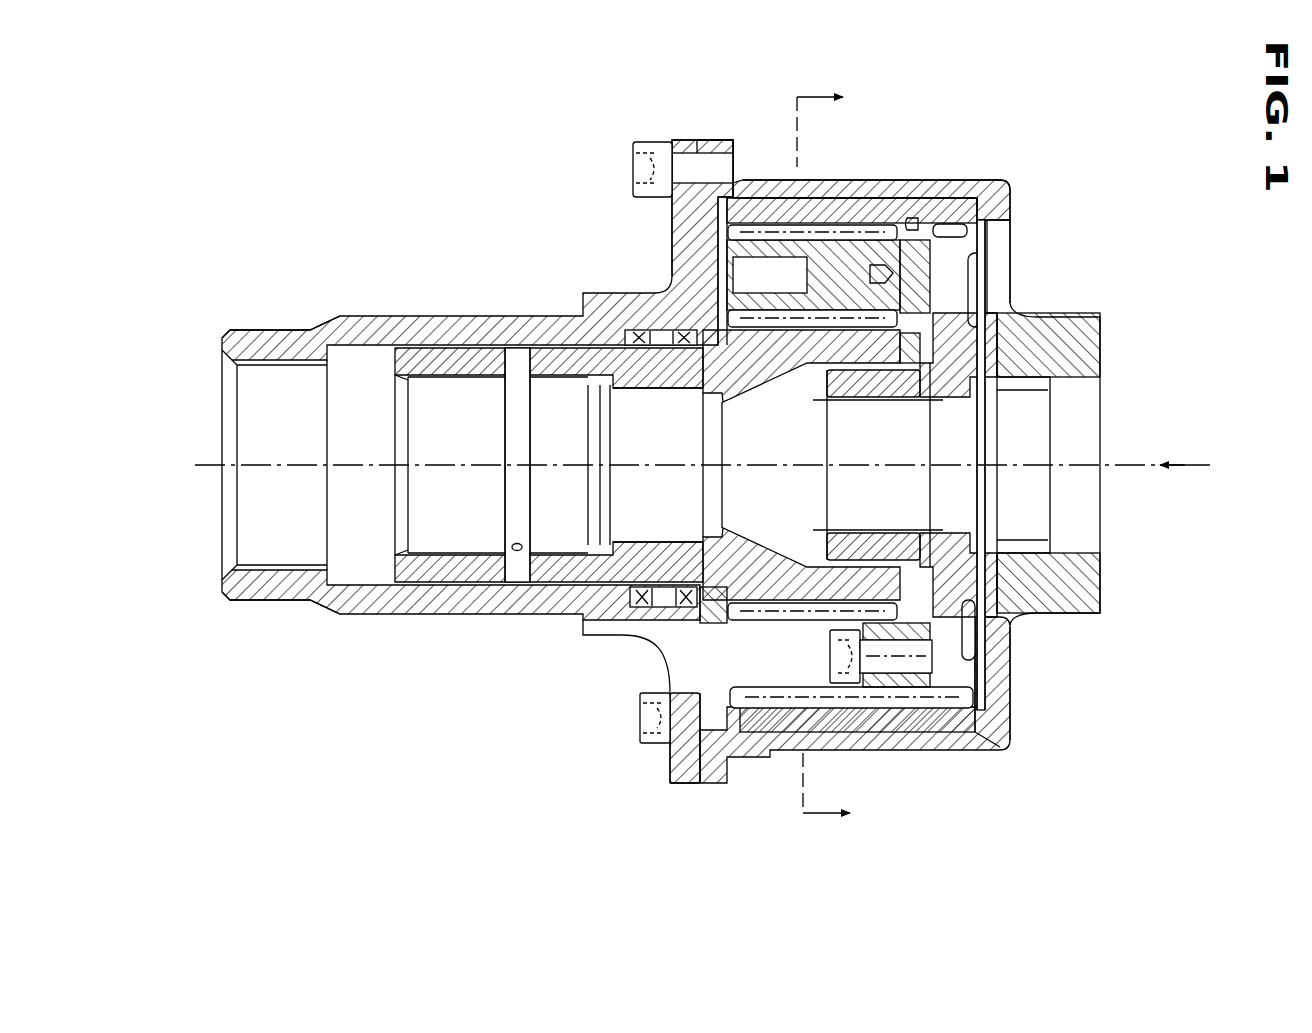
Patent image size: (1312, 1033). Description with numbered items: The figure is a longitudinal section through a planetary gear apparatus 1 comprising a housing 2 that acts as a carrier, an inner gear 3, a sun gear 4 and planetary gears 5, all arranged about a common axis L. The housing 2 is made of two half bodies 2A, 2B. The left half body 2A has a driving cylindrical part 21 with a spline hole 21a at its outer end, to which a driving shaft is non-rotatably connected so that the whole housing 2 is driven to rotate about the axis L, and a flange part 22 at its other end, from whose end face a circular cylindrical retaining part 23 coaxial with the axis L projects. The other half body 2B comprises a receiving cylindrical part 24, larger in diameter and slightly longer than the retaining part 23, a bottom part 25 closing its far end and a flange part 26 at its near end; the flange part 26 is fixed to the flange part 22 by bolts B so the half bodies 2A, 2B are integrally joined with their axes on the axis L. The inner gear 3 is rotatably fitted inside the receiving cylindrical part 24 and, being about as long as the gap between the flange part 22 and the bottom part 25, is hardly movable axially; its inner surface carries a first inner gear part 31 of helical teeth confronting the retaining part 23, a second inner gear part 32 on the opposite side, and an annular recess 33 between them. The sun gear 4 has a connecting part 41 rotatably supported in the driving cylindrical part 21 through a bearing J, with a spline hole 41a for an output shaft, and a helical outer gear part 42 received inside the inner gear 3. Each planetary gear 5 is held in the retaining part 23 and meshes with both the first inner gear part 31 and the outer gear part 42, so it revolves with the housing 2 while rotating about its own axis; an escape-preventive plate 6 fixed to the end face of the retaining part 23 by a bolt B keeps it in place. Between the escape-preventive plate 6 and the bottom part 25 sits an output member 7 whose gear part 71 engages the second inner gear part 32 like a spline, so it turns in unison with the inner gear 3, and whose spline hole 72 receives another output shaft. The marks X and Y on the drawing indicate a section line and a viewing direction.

The planetary gear apparatus 1 is at (972, 142).
The housing 2 is at (523, 314).
The half body 2A is at (408, 314).
The half body 2B is at (985, 176).
The inner gear 3 is at (833, 720).
The sun gear 4 is at (760, 633).
The planetary gear 5 is at (863, 217).
The escape-preventive plate 6 is at (913, 680).
The output member 7 is at (1020, 707).
The driving cylindrical part 21 is at (452, 314).
The spline hole 21a is at (275, 365).
The flange part 22 is at (682, 139).
The retaining part 23 is at (887, 660).
The receiving cylindrical part 24 is at (836, 178).
The bottom part 25 is at (1020, 670).
The flange part 26 is at (706, 139).
The first inner gear part 31 is at (790, 217).
The second inner gear part 32 is at (1000, 197).
The annular recess 33 is at (923, 217).
The connecting part 41 is at (546, 572).
The spline hole 41a is at (447, 540).
The outer gear part 42 is at (790, 620).
The gear part 71 is at (962, 687).
The spline hole 72 is at (915, 417).
The bolt B is at (648, 142).
The bearing J is at (640, 630).
The axis L is at (268, 468).
The section line X is at (823, 460).
The direction arrow Y is at (1198, 467).